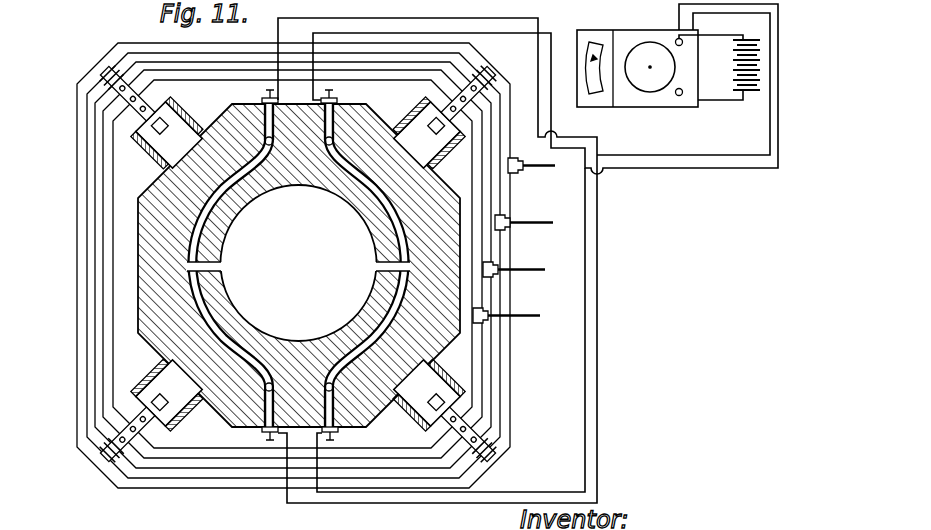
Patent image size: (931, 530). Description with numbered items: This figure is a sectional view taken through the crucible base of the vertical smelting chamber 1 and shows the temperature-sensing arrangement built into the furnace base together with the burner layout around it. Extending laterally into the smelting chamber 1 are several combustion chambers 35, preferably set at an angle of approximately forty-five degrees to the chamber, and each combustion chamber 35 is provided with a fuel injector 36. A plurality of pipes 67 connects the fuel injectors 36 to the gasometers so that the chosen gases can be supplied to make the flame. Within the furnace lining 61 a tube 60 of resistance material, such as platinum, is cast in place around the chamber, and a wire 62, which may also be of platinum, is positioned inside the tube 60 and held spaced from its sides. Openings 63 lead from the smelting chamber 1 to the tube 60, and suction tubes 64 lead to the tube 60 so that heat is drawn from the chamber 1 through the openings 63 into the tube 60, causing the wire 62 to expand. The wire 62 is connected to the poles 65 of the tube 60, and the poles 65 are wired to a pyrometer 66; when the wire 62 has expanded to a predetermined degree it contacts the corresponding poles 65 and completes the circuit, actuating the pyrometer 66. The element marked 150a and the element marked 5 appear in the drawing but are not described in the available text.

The smelting chamber 1 is at (299, 263).
The adjusting screw 5 is at (110, 84).
The combustion chamber 35 is at (298, 264).
The fuel injector 36 is at (152, 110).
The tube 60 is at (402, 230).
The lining 61 is at (160, 292).
The wire 62 is at (232, 350).
The openings 63 is at (221, 267).
The suction tubes 64 is at (324, 135).
The poles 65 is at (326, 94).
The pyrometer 66 is at (653, 72).
The pipes 67 is at (511, 389).
The circuit enclosure wire 150a is at (598, 356).